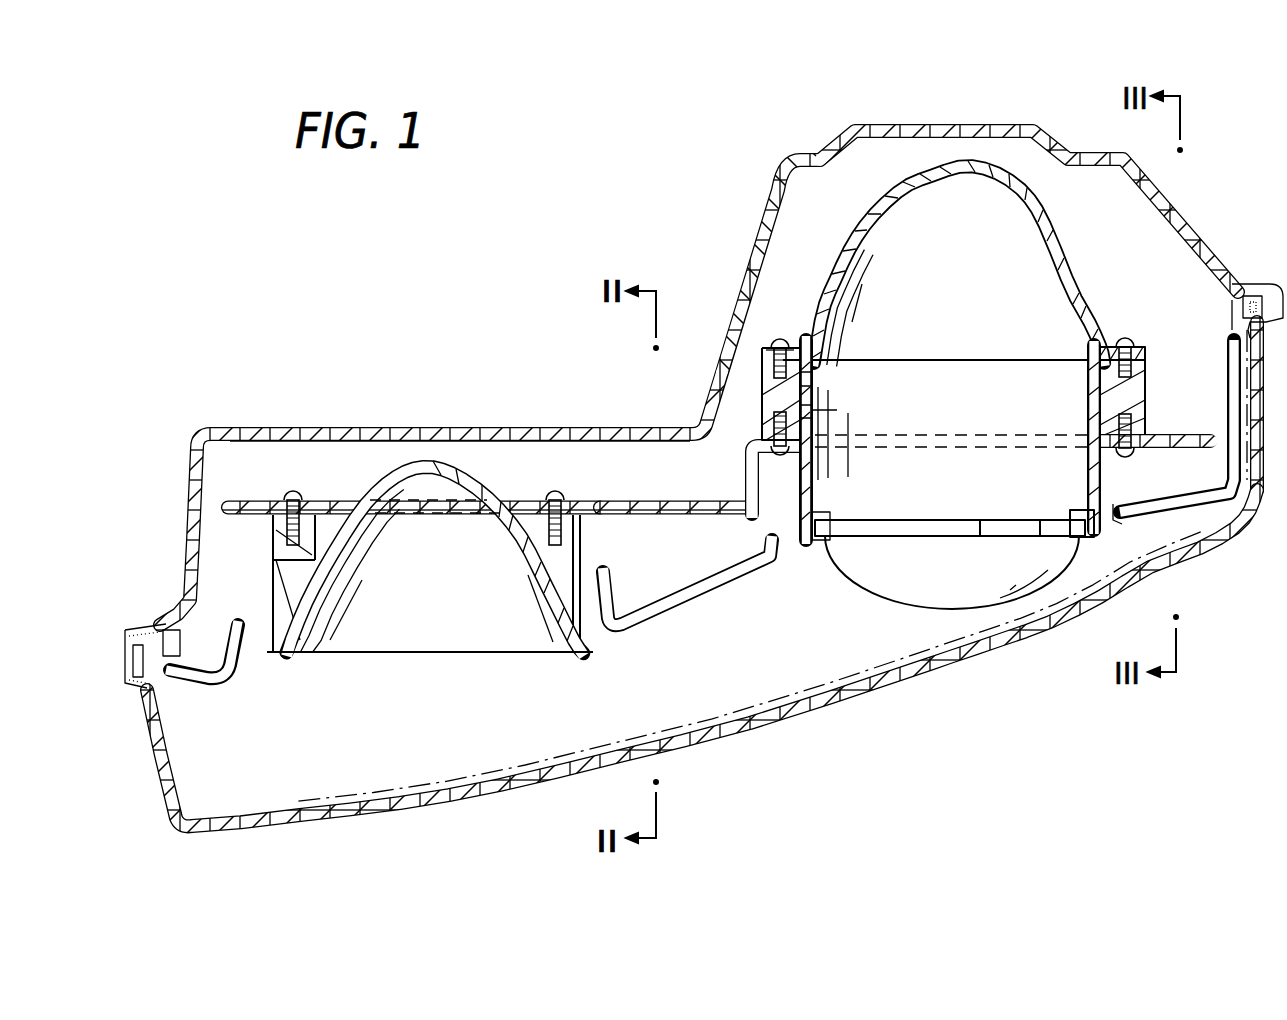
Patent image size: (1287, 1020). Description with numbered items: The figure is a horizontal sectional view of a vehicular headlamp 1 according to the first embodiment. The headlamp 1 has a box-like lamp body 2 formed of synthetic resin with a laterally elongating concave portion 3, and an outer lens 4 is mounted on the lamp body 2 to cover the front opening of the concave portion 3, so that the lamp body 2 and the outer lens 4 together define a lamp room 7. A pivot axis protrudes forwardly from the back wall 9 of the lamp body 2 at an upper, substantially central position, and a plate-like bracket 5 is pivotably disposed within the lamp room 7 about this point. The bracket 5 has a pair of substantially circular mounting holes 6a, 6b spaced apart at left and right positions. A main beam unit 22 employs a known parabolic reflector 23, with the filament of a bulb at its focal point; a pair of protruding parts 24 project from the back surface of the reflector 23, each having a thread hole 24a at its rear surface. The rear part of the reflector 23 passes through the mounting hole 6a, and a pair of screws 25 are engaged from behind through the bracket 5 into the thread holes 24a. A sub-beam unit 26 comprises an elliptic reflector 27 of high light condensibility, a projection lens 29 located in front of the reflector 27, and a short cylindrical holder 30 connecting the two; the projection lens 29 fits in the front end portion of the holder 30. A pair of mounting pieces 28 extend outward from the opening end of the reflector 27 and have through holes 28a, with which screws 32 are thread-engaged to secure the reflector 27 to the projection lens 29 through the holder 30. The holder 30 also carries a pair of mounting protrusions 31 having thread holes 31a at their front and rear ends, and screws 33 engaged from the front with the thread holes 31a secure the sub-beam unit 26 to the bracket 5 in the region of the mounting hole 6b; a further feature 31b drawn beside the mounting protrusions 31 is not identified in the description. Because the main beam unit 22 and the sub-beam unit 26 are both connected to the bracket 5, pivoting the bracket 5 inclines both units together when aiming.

The headlamp 1 is at (704, 478).
The lamp body 2 is at (768, 200).
The concave portion 3 is at (205, 530).
The outer lens 4 is at (855, 700).
The bracket 5 is at (681, 514).
The mounting hole 6a is at (515, 500).
The mounting hole 6b is at (1086, 435).
The lamp room 7 is at (705, 657).
The back wall 9 is at (441, 428).
The main beam unit 22 is at (375, 653).
The parabolic reflector 23 is at (546, 612).
The protruding parts 24 is at (272, 540).
The thread hole 24a is at (332, 540).
The screws 25 is at (295, 491).
The sub-beam unit 26 is at (935, 589).
The elliptic reflector 27 is at (876, 207).
The mounting pieces 28 is at (770, 350).
The through hole 28a is at (830, 342).
The projection lens 29 is at (846, 578).
The holder 30 is at (1097, 522).
The mounting protrusions 31 is at (770, 382).
The thread holes 31a is at (820, 410).
The upper flange 31b is at (812, 380).
The screws 32 is at (781, 338).
The screws 33 is at (780, 460).